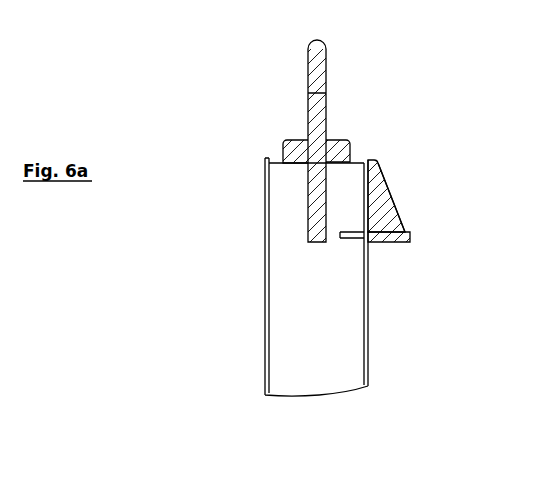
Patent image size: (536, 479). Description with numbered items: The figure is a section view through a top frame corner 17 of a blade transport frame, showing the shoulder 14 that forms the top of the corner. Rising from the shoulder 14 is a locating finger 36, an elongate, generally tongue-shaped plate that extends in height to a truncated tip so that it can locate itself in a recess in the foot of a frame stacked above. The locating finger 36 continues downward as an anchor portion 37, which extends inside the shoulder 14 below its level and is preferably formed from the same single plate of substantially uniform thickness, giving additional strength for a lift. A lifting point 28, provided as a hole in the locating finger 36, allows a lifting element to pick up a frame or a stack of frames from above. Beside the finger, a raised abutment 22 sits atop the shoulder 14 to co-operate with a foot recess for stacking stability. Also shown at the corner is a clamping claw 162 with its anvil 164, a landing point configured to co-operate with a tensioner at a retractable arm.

The frame corner 17 is at (161, 241).
The lifting point 28 is at (317, 110).
The locating finger 36 is at (317, 64).
The anchor portion 37 is at (317, 210).
The raised abutment 22 is at (283, 148).
The shoulder 14 is at (360, 157).
The clamping claw 162 is at (380, 212).
The anvil 164 is at (405, 237).